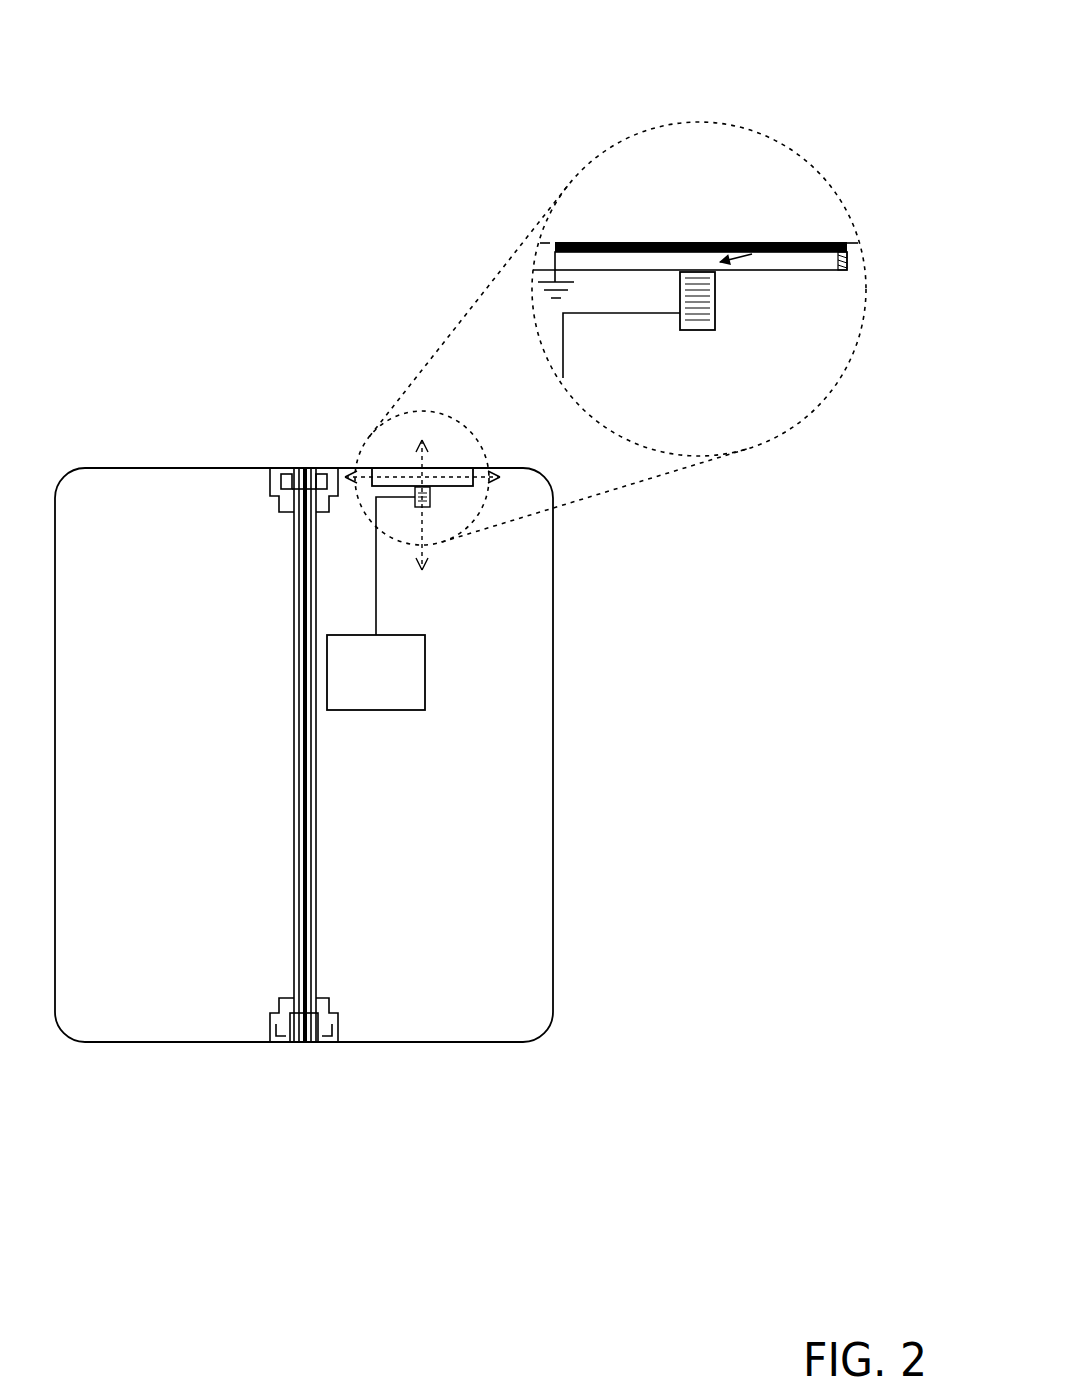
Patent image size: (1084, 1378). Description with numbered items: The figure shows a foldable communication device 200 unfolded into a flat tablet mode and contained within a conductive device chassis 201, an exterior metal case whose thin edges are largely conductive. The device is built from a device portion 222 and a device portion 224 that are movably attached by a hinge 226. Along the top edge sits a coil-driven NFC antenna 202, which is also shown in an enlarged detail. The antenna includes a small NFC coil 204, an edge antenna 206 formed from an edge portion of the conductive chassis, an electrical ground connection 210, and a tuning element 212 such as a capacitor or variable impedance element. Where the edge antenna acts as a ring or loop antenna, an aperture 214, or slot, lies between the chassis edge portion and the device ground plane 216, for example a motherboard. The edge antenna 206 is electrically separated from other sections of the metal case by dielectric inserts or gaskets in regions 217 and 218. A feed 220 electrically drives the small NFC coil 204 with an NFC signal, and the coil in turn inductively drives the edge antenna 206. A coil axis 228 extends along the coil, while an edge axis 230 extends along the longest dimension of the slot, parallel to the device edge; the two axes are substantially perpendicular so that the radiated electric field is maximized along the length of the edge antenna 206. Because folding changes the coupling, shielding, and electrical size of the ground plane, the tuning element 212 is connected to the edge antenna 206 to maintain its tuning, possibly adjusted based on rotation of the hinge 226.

The foldable communication device 200 is at (188, 82).
The conductive device chassis 201 is at (553, 757).
The coil-driven NFC antenna 202 is at (390, 440).
The small NFC coil 204 is at (715, 322).
The edge antenna 206 is at (663, 242).
The electrical ground connection 210 is at (540, 256).
The tuning element 212 is at (847, 262).
The aperture 214 is at (758, 242).
The device ground plane 216 is at (818, 321).
The region 217 is at (547, 226).
The region 218 is at (851, 226).
The feed 220 is at (358, 699).
The device portion 222 is at (212, 1018).
The device portion 224 is at (408, 1018).
The hinge 226 is at (303, 1066).
The coil axis 228 is at (423, 537).
The edge axis 230 is at (478, 480).